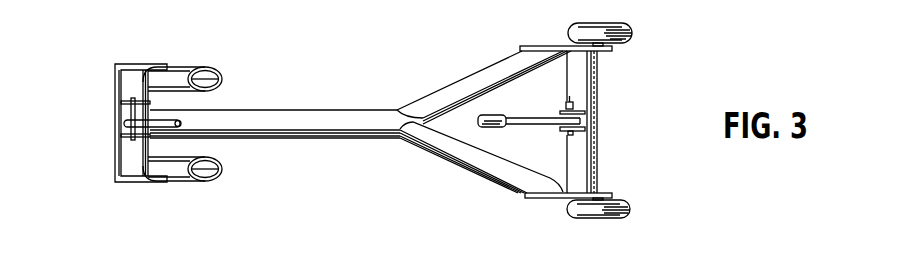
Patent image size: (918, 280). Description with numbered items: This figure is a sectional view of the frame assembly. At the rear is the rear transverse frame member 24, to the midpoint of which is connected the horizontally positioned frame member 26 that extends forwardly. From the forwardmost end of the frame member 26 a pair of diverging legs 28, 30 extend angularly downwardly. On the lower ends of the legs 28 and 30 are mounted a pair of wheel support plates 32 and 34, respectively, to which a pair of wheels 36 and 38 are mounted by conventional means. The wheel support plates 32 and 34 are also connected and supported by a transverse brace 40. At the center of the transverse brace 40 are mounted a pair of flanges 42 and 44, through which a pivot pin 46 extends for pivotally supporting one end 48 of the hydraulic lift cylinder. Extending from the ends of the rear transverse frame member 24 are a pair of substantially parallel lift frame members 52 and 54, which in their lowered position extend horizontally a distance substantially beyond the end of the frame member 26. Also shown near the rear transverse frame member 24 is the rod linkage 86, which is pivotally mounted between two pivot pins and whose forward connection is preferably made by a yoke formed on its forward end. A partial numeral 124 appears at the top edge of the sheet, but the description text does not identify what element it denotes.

The rear transverse frame member 24 is at (140, 93).
The horizontally positioned frame member 26 is at (318, 120).
The diverging leg 28 is at (478, 82).
The diverging leg 30 is at (443, 137).
The wheel support plate 32 is at (553, 46).
The wheel support plate 34 is at (543, 199).
The wheel 36 is at (610, 32).
The wheel 38 is at (628, 212).
The transverse brace 40 is at (584, 75).
The flange 42 is at (585, 112).
The flange 44 is at (585, 132).
The pivot pin 46 is at (566, 100).
The end of hydraulic lift cylinder 48 is at (520, 124).
The lift frame member 52 is at (172, 77).
The lift frame member 54 is at (170, 165).
The rod linkage 86 is at (221, 130).
The wheel axle 124 is at (590, 5).